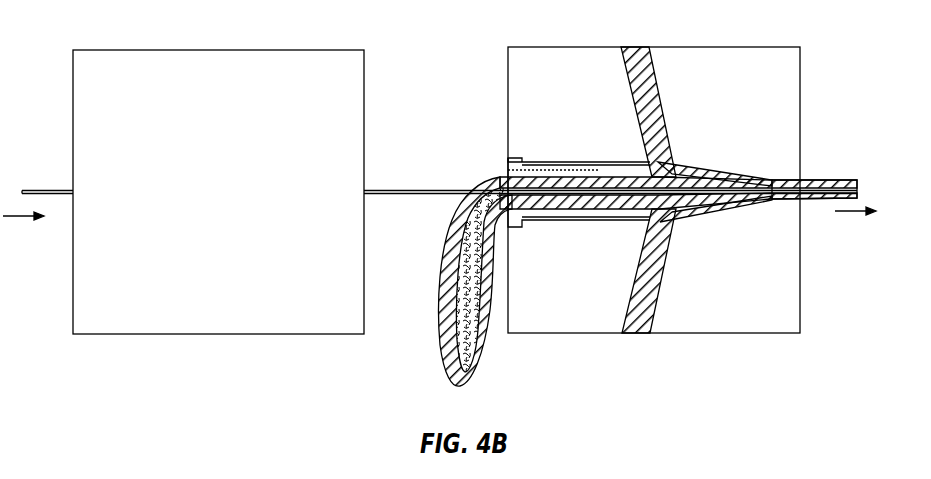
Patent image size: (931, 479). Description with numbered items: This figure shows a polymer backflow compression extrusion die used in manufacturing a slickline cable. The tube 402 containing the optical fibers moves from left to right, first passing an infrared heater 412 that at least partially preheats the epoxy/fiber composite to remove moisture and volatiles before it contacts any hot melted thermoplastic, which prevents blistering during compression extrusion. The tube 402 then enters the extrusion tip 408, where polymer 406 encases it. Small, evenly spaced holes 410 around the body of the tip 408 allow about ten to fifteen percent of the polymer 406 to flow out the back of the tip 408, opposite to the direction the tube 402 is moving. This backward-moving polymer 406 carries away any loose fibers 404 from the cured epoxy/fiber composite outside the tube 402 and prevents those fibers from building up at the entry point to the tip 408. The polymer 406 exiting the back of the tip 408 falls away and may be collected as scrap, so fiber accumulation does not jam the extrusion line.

The tube 402 is at (440, 190).
The loose fibers 404 is at (440, 335).
The polymer 406 is at (600, 177).
The extrusion tip 408 is at (716, 204).
The holes 410 is at (668, 162).
The infrared heater 412 is at (185, 67).